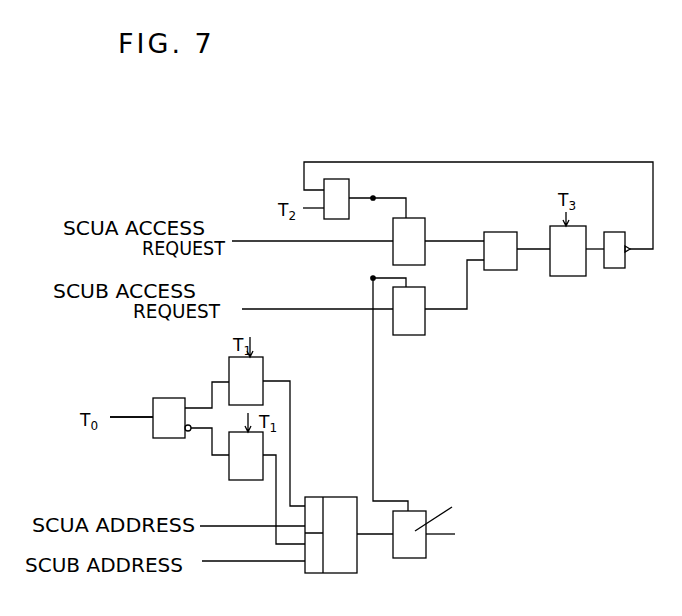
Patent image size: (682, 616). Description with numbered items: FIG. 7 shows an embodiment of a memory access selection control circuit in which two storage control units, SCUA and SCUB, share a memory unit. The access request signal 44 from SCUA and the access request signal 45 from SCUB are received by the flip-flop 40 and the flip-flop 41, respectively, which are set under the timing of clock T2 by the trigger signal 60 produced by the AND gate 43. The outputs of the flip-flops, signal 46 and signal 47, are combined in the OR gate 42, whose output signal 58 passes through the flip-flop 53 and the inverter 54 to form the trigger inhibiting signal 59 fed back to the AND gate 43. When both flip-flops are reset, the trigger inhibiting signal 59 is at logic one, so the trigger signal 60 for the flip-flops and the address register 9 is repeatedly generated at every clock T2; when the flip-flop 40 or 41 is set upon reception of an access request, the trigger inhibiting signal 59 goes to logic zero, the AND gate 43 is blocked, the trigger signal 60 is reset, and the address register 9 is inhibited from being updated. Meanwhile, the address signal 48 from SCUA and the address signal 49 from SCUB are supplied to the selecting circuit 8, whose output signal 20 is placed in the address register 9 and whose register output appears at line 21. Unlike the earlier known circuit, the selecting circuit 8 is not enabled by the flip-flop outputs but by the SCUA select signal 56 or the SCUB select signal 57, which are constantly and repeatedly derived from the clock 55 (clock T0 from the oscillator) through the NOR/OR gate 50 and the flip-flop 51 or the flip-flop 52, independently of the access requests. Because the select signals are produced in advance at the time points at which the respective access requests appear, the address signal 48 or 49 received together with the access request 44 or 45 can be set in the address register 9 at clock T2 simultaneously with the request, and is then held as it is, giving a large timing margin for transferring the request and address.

The selecting circuit 8 is at (336, 497).
The address register 9 is at (420, 511).
The output signal of selecting circuit 20 is at (370, 538).
The register output line 21 is at (443, 536).
The flip-flop 40 is at (428, 220).
The flip-flop 41 is at (410, 335).
The OR gate 42 is at (511, 232).
The AND gate 43 is at (334, 178).
The access request signal 44 is at (265, 241).
The access request signal 45 is at (305, 309).
The output signal of flip-flop 46 is at (467, 241).
The output signal of flip-flop 47 is at (452, 309).
The address signal 48 is at (218, 526).
The address signal 49 is at (258, 561).
The NOR/OR gate 50 is at (175, 398).
The flip-flop 51 is at (263, 368).
The flip-flop 52 is at (255, 480).
The flip-flop 53 is at (565, 276).
The inverter 54 is at (613, 268).
The clock 55 is at (145, 417).
The SCUA select signal 56 is at (290, 425).
The SCUB select signal 57 is at (276, 473).
The output signal of OR gate 58 is at (531, 252).
The trigger inhibiting signal 59 is at (507, 162).
The trigger signal 60 is at (357, 198).